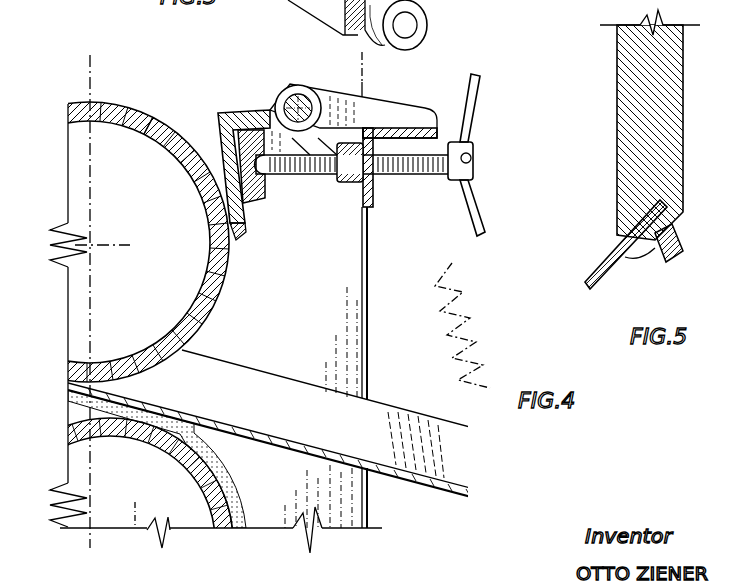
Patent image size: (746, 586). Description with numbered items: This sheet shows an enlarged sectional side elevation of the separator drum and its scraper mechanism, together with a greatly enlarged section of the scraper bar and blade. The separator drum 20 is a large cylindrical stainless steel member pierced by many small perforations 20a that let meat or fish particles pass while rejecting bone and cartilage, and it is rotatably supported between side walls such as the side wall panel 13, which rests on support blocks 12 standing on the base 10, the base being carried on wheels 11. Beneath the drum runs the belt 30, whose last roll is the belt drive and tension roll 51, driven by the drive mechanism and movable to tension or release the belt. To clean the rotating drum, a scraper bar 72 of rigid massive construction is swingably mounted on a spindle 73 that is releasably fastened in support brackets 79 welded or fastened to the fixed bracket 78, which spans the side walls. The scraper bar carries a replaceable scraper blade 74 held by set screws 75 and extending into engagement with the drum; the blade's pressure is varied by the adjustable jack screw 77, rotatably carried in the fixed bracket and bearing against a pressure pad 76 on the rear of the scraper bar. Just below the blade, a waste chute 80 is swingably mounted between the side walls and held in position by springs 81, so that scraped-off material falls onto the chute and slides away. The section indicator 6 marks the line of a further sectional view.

In FIG. 4, the section line 6 is at (128, 78).
In FIG. 4, the base 10 is at (485, 6).
In FIG. 4, the wheels 11 is at (428, 10).
In FIG. 4, the support blocks 12 is at (298, 0).
In FIG. 4, the side wall panel 13 is at (314, 246).
In FIG. 4, the separator drum 20 is at (122, 104).
In FIG. 4, the perforations 20a is at (152, 122).
In FIG. 4, the belt 30 is at (240, 470).
In FIG. 4, the belt drive and tension roll 51 is at (186, 447).
In FIG. 4, the scraper bar 72 is at (234, 113).
In FIG. 5, the scraper bar 72 is at (617, 110).
In FIG. 4, the spindle 73 is at (290, 92).
In FIG. 4, the scraper blade 74 is at (240, 227).
In FIG. 5, the scraper blade 74 is at (598, 260).
In FIG. 5, the set screws 75 is at (681, 256).
In FIG. 4, the pressure pad 76 is at (266, 196).
In FIG. 4, the jack screw 77 is at (428, 166).
In FIG. 4, the fixed bracket 78 is at (393, 128).
In FIG. 4, the support brackets 79 is at (345, 96).
In FIG. 4, the waste chute 80 is at (353, 438).
In FIG. 4, the springs 81 is at (480, 352).